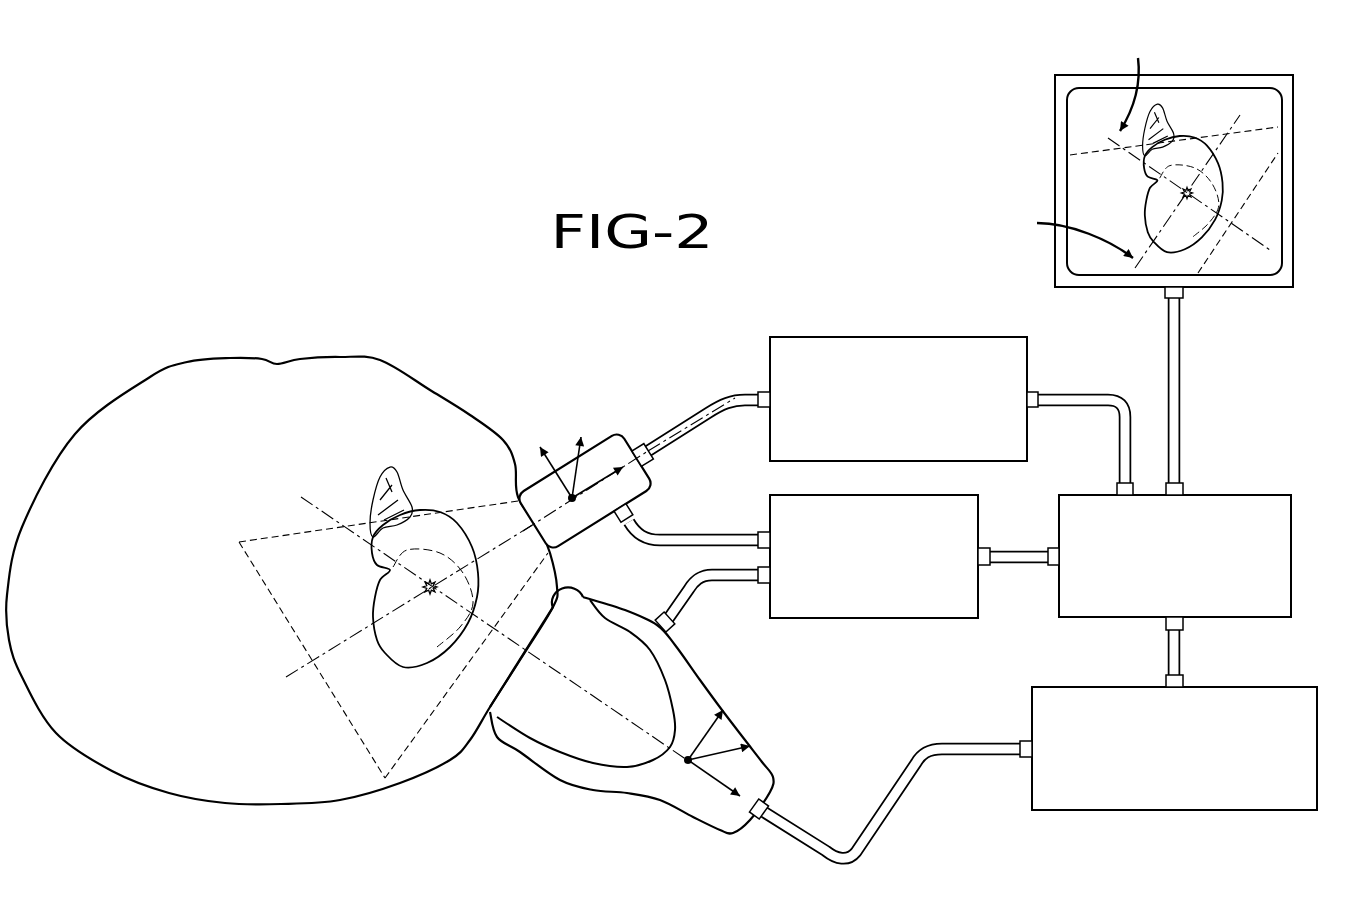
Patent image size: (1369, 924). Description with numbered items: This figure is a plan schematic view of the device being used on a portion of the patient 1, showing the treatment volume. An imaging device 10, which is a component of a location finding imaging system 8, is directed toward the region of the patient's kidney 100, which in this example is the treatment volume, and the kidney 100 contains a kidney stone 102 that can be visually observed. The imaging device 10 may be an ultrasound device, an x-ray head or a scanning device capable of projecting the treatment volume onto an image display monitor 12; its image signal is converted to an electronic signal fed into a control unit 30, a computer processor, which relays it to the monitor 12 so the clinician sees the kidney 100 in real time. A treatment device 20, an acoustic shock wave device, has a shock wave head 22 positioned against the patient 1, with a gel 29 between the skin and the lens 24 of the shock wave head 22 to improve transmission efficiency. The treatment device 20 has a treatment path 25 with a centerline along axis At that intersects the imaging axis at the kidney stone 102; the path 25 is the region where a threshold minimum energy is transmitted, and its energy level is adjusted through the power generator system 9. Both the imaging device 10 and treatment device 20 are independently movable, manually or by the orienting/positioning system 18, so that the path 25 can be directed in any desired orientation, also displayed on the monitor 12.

The patient 1 is at (380, 361).
The location finding imaging system 8 is at (887, 337).
The power generator system 9 is at (1177, 810).
The imaging device 10 is at (628, 430).
The image display monitor 12 is at (1090, 75).
The orienting/positioning system 18 is at (878, 618).
The treatment device 20 is at (680, 670).
The shock wave head 22 is at (585, 725).
The lens 24 is at (537, 632).
The treatment path 25 is at (408, 585).
The gel 29 is at (493, 660).
The control unit 30 is at (1240, 492).
The kidney 100 is at (427, 531).
The kidney stone 102 is at (427, 598).